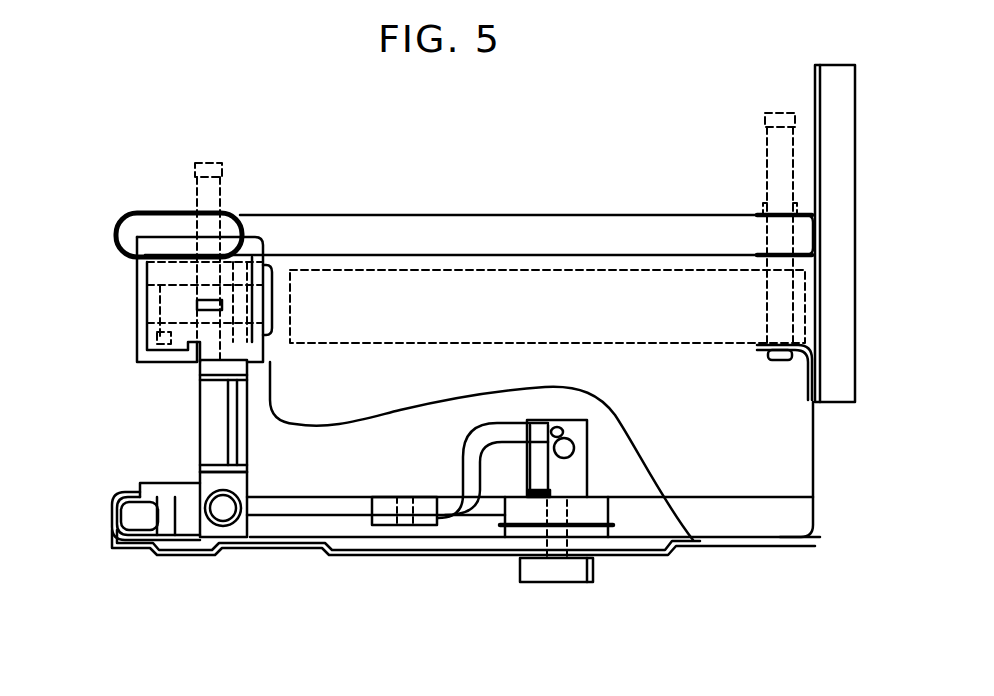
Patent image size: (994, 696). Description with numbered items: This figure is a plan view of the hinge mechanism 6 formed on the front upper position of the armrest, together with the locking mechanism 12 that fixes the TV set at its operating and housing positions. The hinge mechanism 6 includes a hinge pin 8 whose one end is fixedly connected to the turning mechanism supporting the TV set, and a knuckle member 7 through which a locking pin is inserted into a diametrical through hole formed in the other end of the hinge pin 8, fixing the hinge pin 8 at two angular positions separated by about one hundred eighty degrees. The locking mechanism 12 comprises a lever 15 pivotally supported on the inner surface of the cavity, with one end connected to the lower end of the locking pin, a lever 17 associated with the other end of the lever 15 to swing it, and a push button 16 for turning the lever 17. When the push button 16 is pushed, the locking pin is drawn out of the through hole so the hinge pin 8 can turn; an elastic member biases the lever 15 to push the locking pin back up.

The hinge mechanism 6 is at (166, 428).
The knuckle member 7 is at (200, 482).
The hinge pin 8 is at (200, 371).
The locking mechanism 12 is at (187, 566).
The lever 15 is at (343, 498).
The push button 16 is at (568, 585).
The lever 17 is at (530, 458).